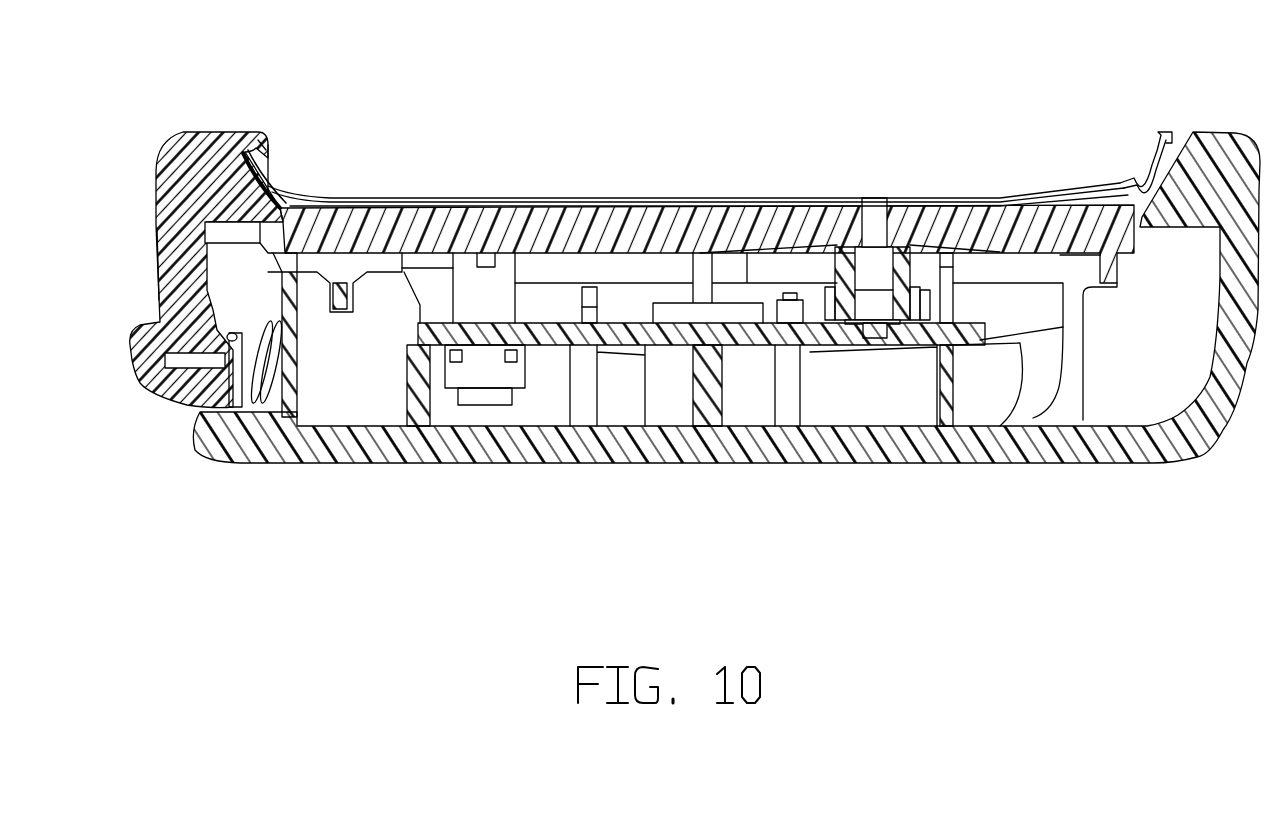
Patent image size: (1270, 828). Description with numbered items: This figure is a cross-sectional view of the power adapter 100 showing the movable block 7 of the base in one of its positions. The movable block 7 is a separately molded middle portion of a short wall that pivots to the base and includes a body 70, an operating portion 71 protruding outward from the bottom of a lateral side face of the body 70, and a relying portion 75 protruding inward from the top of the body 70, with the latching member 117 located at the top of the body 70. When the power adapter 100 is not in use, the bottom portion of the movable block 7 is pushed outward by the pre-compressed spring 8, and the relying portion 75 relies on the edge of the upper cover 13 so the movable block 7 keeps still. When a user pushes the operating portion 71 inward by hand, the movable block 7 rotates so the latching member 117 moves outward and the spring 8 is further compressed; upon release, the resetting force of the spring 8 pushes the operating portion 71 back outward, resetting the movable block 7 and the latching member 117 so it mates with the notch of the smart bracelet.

The power adapter 100 is at (703, 182).
The movable block 7 is at (175, 237).
The body 70 is at (182, 255).
The operating portion 71 is at (127, 337).
The latching member 117 is at (262, 137).
The relying portion 75 is at (303, 190).
The upper cover 13 is at (395, 199).
The spring 8 is at (284, 415).